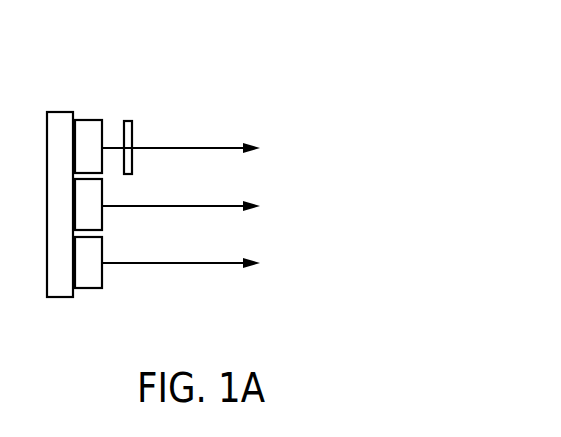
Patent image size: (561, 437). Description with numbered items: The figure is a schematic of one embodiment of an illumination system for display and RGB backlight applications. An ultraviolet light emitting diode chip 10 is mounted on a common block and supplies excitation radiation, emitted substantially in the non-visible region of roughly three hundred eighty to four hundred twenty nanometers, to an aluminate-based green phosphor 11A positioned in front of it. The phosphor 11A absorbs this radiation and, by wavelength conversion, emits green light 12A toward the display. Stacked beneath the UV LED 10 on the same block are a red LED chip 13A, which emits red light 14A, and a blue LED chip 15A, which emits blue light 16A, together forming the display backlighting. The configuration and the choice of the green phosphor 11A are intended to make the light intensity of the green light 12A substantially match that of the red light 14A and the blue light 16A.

The ultraviolet light emitting diode chip 10 is at (91, 112).
The aluminate-based green phosphor 11A is at (146, 130).
The green light 12A is at (382, 146).
The red LED chip 13A is at (110, 220).
The red light 14A is at (346, 205).
The blue LED chip 15A is at (87, 302).
The blue light 16A is at (354, 268).